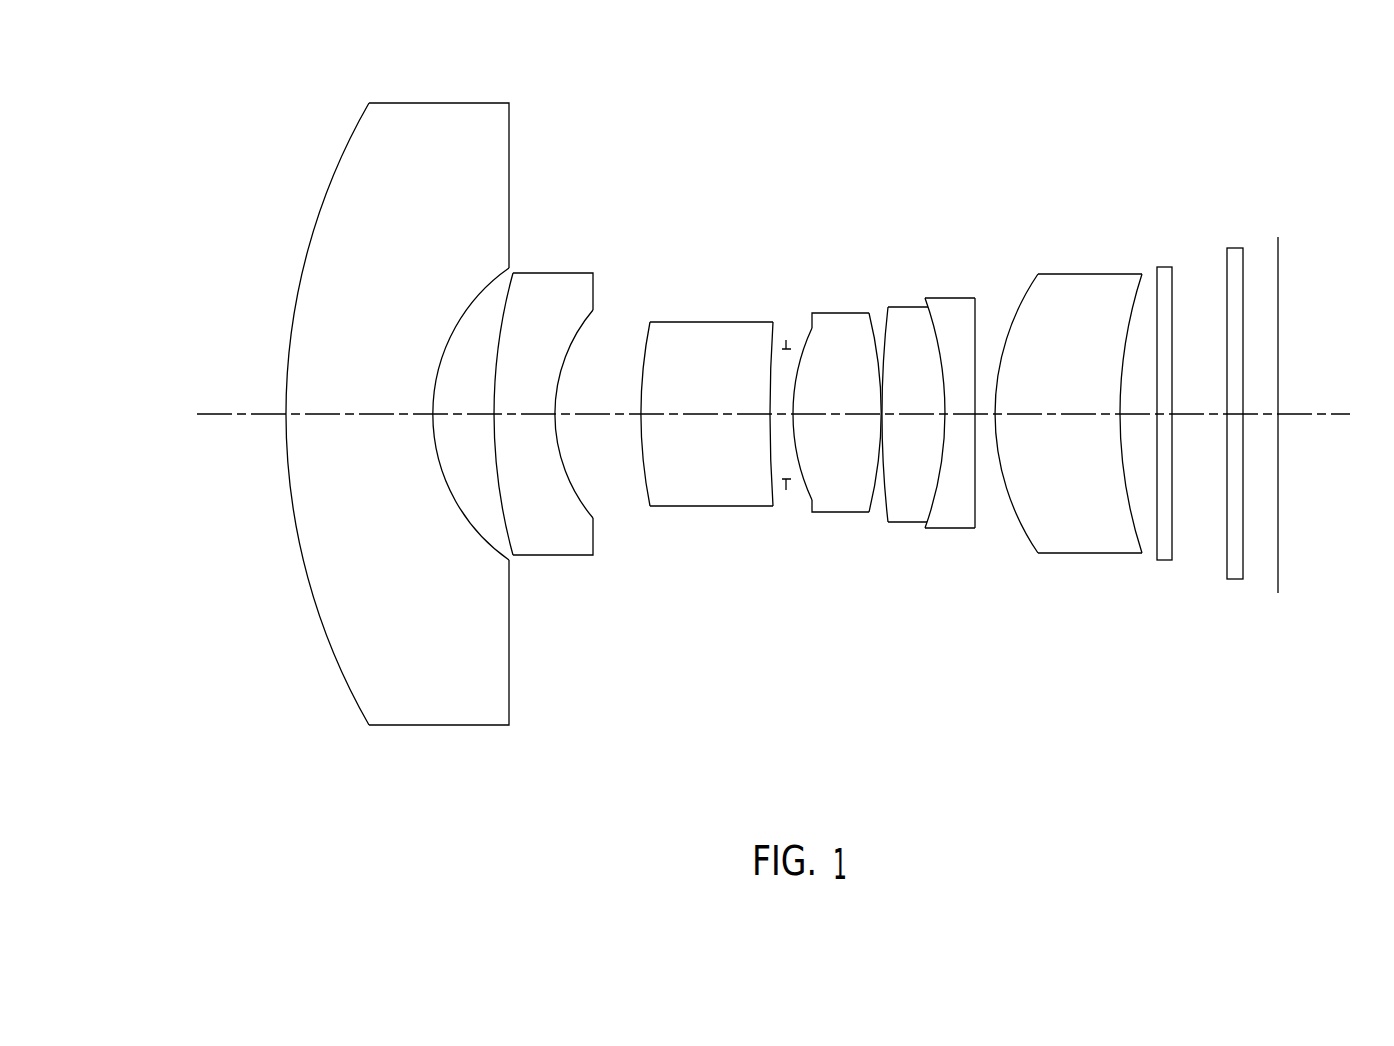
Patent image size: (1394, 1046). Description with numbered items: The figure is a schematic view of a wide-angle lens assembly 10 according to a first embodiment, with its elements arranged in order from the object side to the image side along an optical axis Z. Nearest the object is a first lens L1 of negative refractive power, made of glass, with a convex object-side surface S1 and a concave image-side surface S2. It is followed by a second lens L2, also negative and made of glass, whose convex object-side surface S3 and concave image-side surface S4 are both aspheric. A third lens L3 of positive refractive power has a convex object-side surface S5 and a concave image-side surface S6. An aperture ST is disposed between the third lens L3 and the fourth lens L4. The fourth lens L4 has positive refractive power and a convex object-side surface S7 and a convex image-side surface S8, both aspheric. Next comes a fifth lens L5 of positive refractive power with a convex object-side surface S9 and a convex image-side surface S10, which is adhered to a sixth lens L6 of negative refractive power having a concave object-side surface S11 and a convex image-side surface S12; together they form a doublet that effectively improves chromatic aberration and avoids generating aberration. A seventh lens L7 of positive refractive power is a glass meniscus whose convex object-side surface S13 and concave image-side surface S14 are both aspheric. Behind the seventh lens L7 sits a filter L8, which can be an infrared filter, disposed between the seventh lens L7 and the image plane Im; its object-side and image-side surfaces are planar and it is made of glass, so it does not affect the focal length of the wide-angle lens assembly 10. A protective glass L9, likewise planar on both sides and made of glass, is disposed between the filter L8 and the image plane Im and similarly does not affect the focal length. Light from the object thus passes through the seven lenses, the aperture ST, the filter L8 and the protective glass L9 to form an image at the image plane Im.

The wide-angle lens assembly 10 is at (245, 158).
The first lens L1 is at (407, 387).
The second lens L2 is at (608, 445).
The third lens L3 is at (742, 445).
The fourth lens L4 is at (870, 445).
The fifth lens L5 is at (992, 470).
The sixth lens L6 is at (1032, 445).
The seventh lens L7 is at (1139, 444).
The filter L8 is at (1165, 267).
The protective glass L9 is at (1238, 248).
The aperture ST is at (786, 338).
The image plane Im is at (1278, 279).
The optical axis Z is at (757, 412).
The object-side surface of the first lens S1 is at (305, 567).
The image-side surface of the first lens S2 is at (483, 545).
The object-side surface of the second lens S3 is at (503, 507).
The image-side surface of the second lens S4 is at (568, 478).
The object-side surface of the third lens S5 is at (645, 472).
The image-side surface of the third lens S6 is at (770, 455).
The object-side surface of the fourth lens S7 is at (805, 482).
The image-side surface of the fourth lens S8 is at (876, 470).
The object-side surface of the fifth lens S9 is at (887, 490).
The image-side surface of the fifth lens S10 is at (1014, 542).
The object-side surface of the sixth lens S11 is at (940, 475).
The image-side surface of the sixth lens S12 is at (975, 480).
The object-side surface of the seventh lens S13 is at (1010, 487).
The image-side surface of the seventh lens S14 is at (1122, 550).